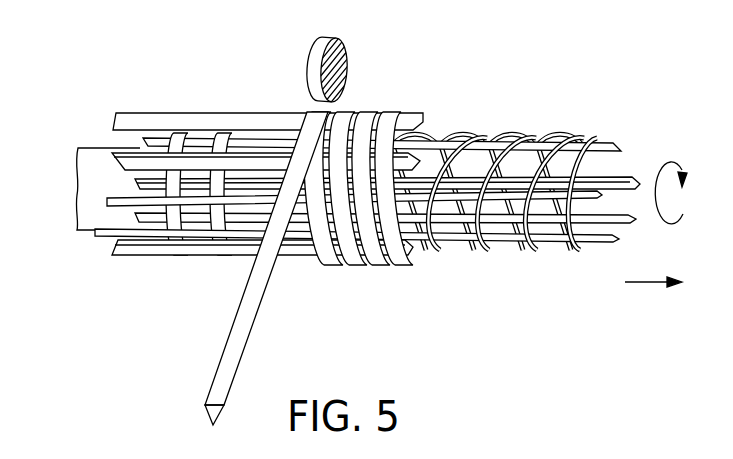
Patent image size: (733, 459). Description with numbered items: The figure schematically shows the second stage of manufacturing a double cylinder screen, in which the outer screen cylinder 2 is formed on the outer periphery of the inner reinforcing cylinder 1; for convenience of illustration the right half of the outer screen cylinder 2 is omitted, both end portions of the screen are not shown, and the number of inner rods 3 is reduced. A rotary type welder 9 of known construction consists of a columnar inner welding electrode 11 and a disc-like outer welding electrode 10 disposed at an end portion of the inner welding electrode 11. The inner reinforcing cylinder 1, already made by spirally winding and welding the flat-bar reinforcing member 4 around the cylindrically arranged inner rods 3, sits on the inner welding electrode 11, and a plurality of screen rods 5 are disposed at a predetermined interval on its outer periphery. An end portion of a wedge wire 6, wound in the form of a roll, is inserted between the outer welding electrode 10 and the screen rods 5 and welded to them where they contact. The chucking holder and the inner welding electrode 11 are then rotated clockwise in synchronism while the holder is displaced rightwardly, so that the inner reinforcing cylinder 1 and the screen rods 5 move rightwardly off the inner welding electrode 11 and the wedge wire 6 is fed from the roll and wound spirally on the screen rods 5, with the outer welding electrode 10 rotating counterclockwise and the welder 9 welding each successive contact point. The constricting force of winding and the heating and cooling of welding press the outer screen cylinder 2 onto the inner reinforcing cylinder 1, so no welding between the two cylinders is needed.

The inner reinforcing cylinder 1 is at (583, 136).
The outer screen cylinder 2 is at (376, 102).
The inner rods 3 is at (510, 241).
The reinforcing member 4 is at (471, 132).
The screen rods 5 is at (221, 122).
The wedge wire 6 is at (248, 305).
The rotary type welder 9 is at (78, 99).
The outer welding electrode 10 is at (316, 52).
The inner welding electrode 11 is at (88, 172).